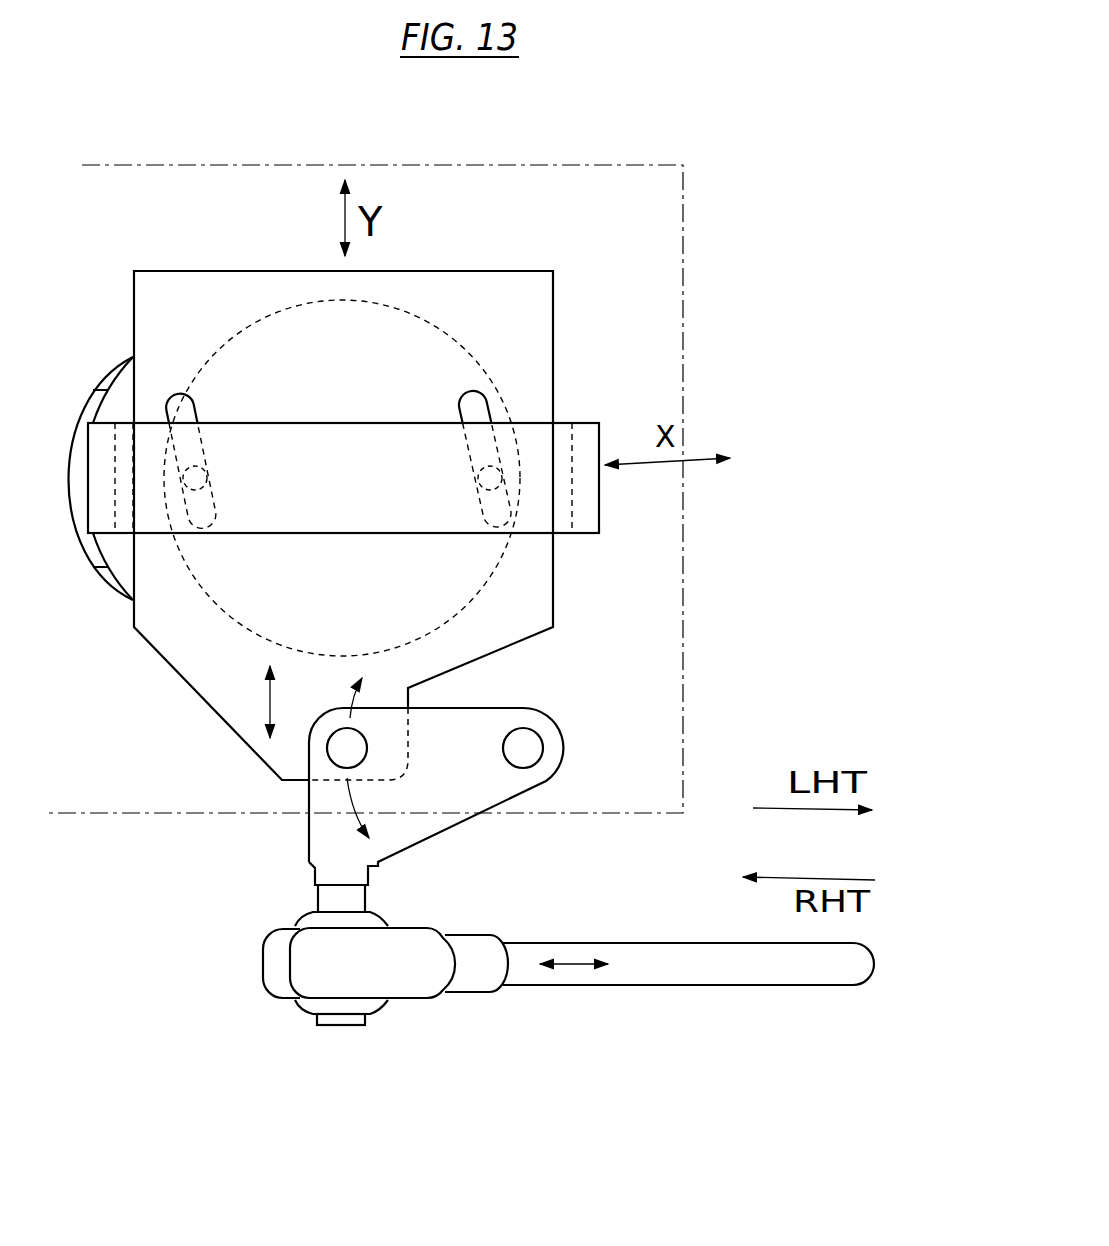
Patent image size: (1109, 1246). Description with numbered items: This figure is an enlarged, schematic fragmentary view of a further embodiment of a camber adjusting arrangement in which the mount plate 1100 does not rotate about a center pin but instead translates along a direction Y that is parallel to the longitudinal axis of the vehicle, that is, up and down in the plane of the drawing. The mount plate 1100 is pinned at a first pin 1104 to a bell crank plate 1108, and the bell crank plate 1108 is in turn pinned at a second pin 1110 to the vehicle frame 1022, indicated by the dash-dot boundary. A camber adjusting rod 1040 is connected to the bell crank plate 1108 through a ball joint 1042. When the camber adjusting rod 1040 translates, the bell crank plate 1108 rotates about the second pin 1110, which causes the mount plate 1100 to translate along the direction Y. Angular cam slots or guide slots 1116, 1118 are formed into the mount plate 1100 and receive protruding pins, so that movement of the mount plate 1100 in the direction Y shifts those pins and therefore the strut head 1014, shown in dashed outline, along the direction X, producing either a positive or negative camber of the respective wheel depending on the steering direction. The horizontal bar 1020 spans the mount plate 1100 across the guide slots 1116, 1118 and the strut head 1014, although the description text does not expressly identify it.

The mount plate 1100 is at (466, 270).
The rack bar 1020 is at (585, 422).
The guide slot 1118 is at (193, 407).
The guide slot 1116 is at (458, 403).
The strut head 1014 is at (475, 600).
The vehicle frame 1022 is at (683, 580).
The first pin 1104 is at (338, 742).
The second pin 1110 is at (527, 747).
The bell crank plate 1108 is at (440, 813).
The ball joint 1042 is at (352, 977).
The camber adjusting rod 1040 is at (752, 985).